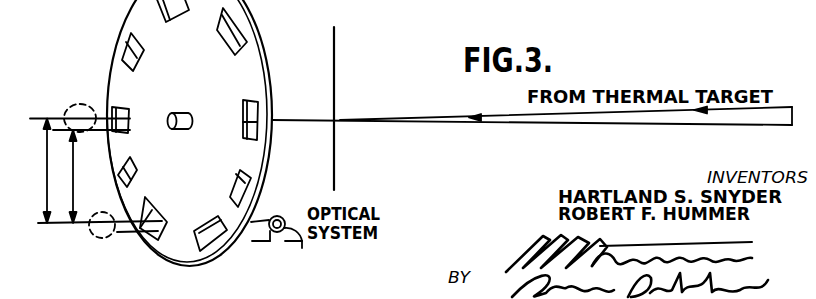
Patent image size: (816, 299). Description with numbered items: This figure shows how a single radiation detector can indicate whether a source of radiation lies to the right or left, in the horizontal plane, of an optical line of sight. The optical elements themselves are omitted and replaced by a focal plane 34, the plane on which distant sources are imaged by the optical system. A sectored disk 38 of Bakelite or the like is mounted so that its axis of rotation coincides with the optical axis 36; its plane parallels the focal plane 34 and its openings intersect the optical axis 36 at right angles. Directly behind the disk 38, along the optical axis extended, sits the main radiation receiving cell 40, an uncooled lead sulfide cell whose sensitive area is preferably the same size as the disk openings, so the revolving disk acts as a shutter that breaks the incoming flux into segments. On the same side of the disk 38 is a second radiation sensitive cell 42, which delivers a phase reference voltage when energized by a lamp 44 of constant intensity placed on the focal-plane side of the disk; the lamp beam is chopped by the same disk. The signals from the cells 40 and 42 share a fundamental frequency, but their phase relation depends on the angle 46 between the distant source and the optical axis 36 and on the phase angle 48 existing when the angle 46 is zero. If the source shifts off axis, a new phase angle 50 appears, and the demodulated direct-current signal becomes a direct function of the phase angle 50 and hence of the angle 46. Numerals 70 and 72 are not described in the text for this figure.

The focal plane 34 is at (336, 166).
The optical axis 36 is at (576, 125).
The sectored disk 38 is at (218, 248).
The main radiation receiving cell 40 is at (82, 105).
The radiation sensitive cell 42 is at (104, 240).
The lamp 44 is at (284, 242).
The angle 46 is at (770, 107).
The phase angle 48 is at (50, 171).
The phase angle 50 is at (74, 176).
The element of figure above 70 is at (510, 8).
The element of figure above 72 is at (640, 8).